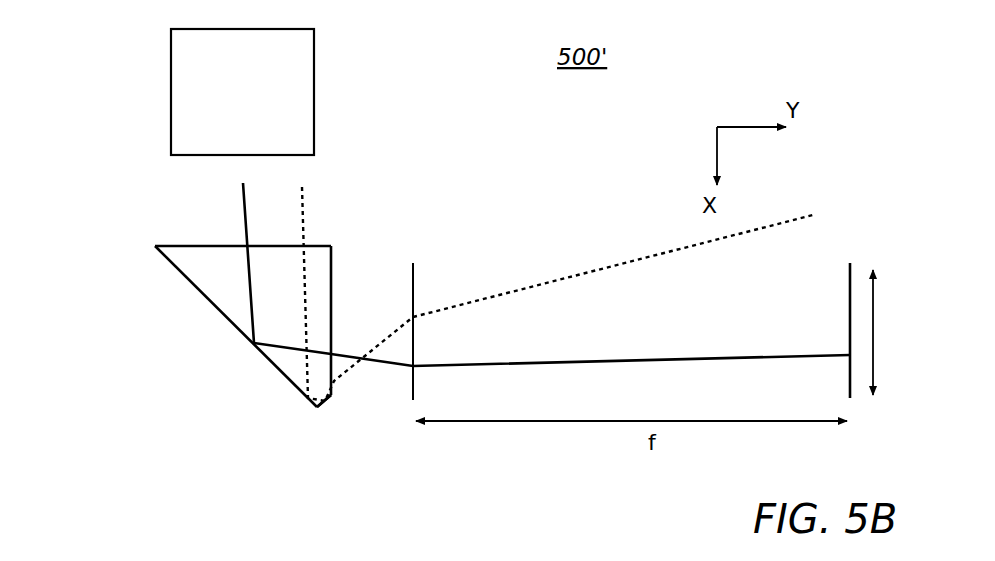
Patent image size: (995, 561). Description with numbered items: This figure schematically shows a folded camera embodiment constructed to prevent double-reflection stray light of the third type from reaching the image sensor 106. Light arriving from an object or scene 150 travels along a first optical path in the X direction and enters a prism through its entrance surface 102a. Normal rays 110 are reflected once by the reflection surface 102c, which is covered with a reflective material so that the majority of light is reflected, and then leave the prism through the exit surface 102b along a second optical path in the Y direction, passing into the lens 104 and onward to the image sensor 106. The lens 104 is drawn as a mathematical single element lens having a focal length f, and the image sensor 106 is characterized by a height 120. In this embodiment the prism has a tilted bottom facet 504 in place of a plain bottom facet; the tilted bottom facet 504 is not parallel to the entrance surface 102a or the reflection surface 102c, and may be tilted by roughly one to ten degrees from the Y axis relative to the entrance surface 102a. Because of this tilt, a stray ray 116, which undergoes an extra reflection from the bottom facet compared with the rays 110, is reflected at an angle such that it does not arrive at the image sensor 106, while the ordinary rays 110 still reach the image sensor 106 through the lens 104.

The object or scene 150 is at (242, 92).
The entrance surface 102a is at (163, 245).
The exit surface 102b is at (333, 266).
The reflection surface 102c is at (287, 380).
The tilted bottom facet 504 is at (320, 407).
The rays 110 is at (240, 200).
The stray ray 116 is at (305, 202).
The lens 104 is at (413, 297).
The image sensor 106 is at (850, 263).
The height 120 is at (873, 318).